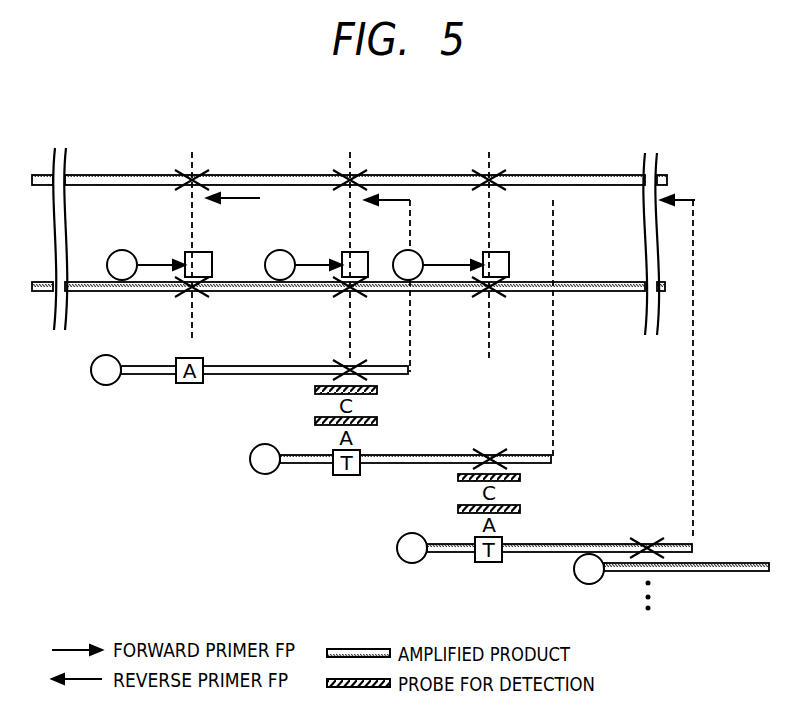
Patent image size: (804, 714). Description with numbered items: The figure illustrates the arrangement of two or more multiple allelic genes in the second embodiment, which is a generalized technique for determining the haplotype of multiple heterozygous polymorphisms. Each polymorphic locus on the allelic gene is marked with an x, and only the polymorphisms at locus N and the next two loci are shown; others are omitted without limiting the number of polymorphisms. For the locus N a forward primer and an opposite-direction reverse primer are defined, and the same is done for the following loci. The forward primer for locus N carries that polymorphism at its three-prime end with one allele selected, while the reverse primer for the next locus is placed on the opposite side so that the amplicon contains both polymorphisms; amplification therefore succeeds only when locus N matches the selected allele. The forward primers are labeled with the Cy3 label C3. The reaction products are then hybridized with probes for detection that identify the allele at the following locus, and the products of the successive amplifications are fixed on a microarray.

The Cy3 label C3 is at (347, 417).
The Nth polymorphic locus N is at (196, 252).